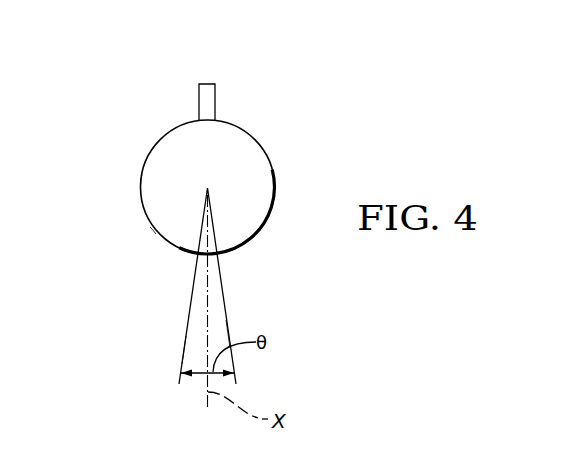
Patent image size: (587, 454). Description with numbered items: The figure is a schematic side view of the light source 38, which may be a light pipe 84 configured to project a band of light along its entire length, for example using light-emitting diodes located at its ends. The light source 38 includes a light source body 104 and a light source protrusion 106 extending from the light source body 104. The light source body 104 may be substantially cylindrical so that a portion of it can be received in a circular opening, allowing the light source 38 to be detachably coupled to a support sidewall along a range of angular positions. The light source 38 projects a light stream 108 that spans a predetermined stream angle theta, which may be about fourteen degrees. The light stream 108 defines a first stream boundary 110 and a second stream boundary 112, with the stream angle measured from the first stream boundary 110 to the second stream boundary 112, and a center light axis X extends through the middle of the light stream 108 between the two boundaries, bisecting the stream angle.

The light source 38 is at (150, 227).
The light pipe 84 is at (138, 192).
The light source body 104 is at (257, 156).
The light source protrusion 106 is at (197, 102).
The light stream 108 is at (185, 297).
The first stream boundary 110 is at (185, 330).
The second stream boundary 112 is at (228, 317).